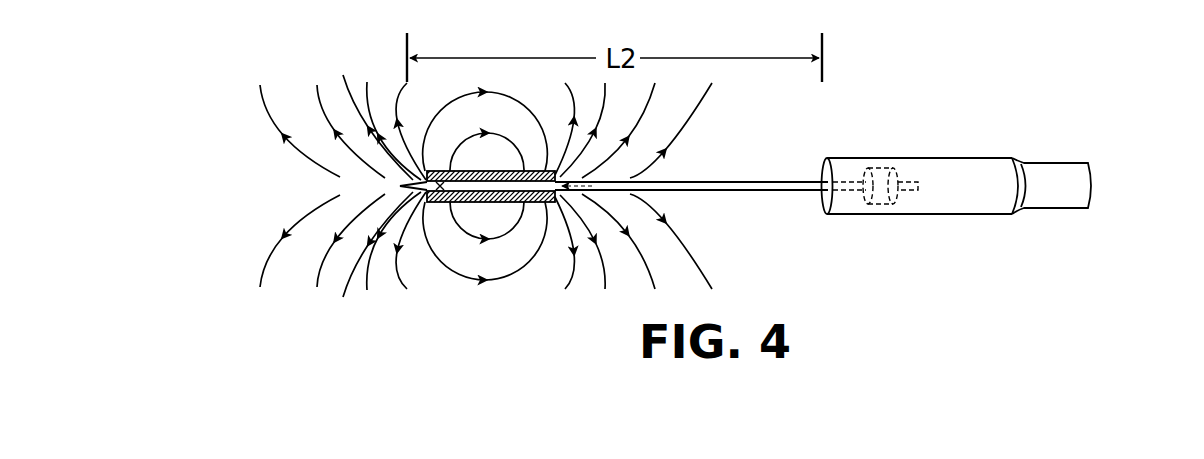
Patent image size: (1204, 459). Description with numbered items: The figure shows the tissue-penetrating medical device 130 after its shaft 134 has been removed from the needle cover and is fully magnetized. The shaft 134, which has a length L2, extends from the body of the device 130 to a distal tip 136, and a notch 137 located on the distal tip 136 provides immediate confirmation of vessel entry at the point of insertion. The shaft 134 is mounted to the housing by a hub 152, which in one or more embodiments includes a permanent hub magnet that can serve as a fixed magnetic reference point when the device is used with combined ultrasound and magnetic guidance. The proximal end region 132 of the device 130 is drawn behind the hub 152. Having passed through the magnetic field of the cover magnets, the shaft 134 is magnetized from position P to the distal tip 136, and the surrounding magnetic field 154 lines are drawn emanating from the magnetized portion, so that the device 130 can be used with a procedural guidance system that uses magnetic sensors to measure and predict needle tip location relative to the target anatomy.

The tissue-penetrating medical device 130 is at (928, 246).
The proximal end cap 132 is at (1055, 196).
The shaft 134 is at (798, 181).
The distal tip 136 is at (486, 173).
The notch 137 is at (447, 202).
The hub 152 is at (886, 206).
The closed magnetic field loops 154 is at (518, 260).